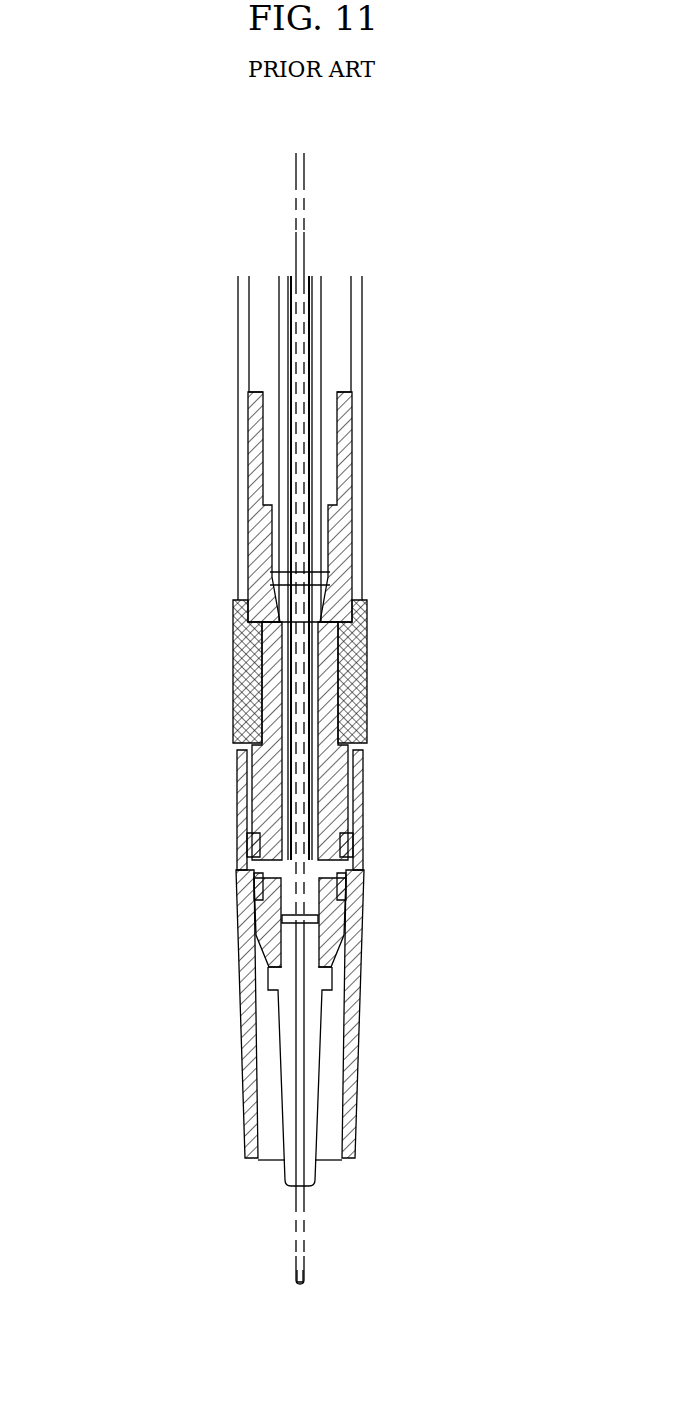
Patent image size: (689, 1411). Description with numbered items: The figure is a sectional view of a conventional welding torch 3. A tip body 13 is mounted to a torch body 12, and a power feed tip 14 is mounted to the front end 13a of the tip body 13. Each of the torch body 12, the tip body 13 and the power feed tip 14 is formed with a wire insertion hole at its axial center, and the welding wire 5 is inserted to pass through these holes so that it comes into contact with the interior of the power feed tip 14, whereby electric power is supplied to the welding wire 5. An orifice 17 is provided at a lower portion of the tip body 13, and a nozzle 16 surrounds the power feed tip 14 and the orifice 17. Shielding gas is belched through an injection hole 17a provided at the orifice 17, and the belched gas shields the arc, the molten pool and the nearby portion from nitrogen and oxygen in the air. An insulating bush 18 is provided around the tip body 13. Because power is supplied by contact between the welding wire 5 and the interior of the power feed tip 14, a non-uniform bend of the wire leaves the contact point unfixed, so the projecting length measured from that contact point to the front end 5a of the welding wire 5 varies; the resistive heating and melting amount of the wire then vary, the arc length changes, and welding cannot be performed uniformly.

The welding torch 3 is at (183, 370).
The welding wire 5 is at (302, 1226).
The front end of the welding wire 5a is at (305, 1278).
The torch body 12 is at (242, 497).
The tip body 13 is at (270, 685).
The front end of the tip body 13a is at (270, 962).
The power feed tip 14 is at (320, 1060).
The nozzle 16 is at (238, 1030).
The orifice 17 is at (245, 848).
The injection hole 17a is at (250, 907).
The insulating bush 18 is at (233, 648).